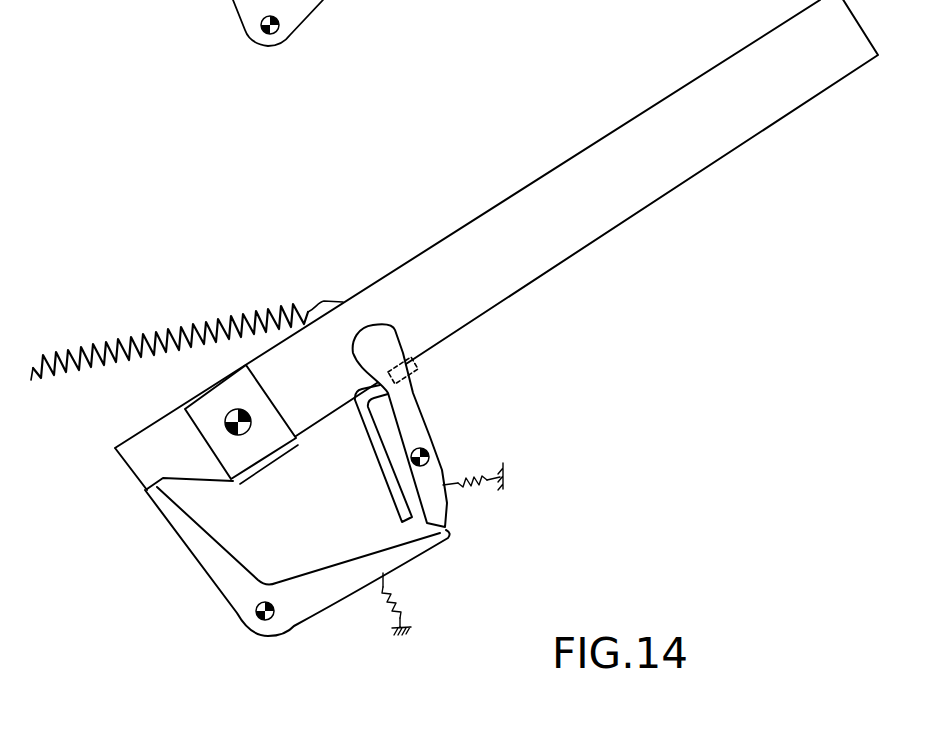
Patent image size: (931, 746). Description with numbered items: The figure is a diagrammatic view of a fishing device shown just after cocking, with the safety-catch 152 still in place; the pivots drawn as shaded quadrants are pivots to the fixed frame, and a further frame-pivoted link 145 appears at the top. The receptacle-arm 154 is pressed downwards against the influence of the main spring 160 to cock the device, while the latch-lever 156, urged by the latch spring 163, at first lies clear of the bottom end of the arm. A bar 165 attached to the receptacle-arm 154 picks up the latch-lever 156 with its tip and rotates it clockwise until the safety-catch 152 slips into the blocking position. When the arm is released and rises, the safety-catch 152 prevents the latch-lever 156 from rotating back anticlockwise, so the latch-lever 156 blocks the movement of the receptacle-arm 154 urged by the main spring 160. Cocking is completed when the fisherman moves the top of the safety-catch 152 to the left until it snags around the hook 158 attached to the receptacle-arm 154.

The bracket link 145 is at (364, 0).
The safety-catch 152 is at (422, 435).
The receptacle-arm 154 is at (680, 173).
The latch-lever 156 is at (188, 527).
The hook 158 is at (410, 387).
The main spring 160 is at (180, 323).
The latch spring 163 is at (403, 608).
The bar 165 is at (382, 460).